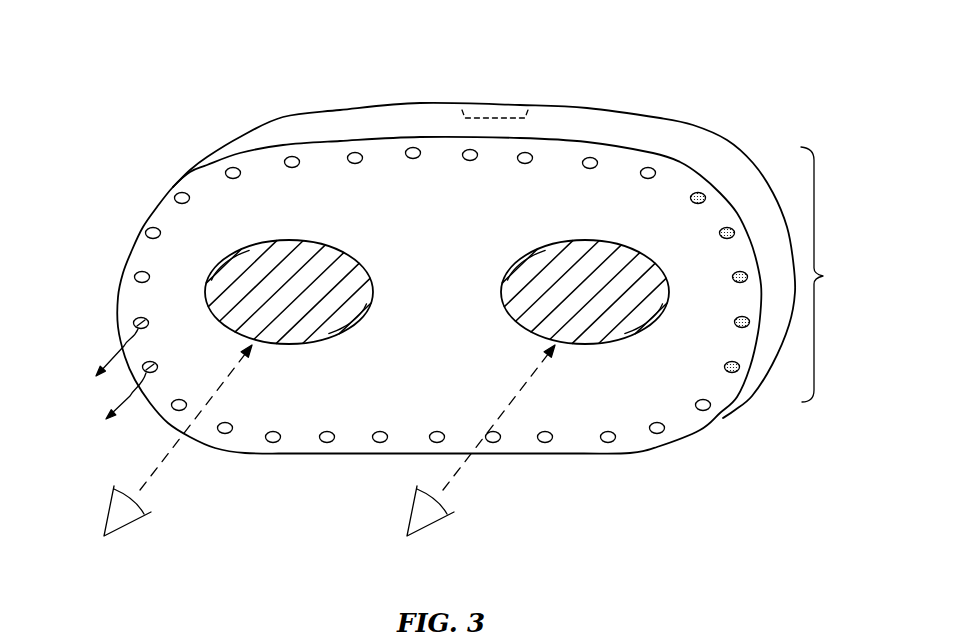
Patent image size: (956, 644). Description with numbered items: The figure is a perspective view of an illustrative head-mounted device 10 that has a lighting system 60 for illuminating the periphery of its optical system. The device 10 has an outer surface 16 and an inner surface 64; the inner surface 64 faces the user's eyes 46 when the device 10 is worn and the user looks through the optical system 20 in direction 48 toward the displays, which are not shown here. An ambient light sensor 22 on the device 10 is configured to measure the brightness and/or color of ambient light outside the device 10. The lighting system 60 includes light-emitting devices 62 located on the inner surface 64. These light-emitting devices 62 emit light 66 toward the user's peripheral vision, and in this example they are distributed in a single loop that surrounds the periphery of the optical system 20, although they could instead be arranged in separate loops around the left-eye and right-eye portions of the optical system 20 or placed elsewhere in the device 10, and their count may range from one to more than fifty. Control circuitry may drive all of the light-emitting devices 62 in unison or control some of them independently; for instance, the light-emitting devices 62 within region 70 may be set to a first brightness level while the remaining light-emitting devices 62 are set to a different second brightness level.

The head-mounted device 10 is at (234, 73).
The outer surface 16 is at (484, 232).
The optical system 20 is at (336, 242).
The ambient light sensor 22 is at (505, 106).
The user's eyes 46 is at (130, 528).
The direction 48 is at (229, 379).
The lighting system 60 is at (642, 452).
The light-emitting devices 62 is at (652, 166).
The inner surface 64 is at (670, 189).
The light 66 is at (109, 353).
The region 70 is at (825, 274).